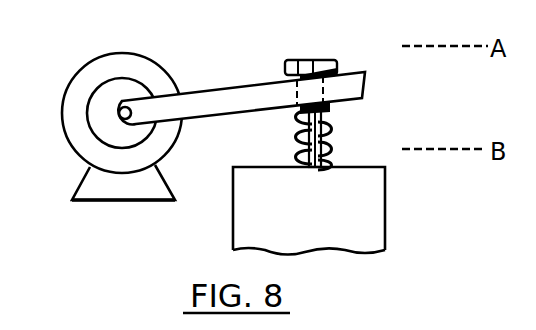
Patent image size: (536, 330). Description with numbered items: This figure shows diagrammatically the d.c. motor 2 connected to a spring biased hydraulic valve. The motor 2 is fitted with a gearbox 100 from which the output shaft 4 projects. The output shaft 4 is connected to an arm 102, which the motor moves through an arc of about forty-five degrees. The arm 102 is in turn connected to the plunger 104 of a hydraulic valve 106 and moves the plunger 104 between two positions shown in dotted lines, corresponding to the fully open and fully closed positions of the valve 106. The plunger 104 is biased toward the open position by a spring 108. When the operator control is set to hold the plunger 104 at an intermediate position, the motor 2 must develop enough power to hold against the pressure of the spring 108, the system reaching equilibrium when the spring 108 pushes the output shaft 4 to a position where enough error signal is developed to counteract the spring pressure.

The gearbox 100 is at (112, 79).
The d.c. motor 2 is at (65, 106).
The output shaft 4 is at (121, 125).
The arm 102 is at (212, 92).
The plunger 104 is at (299, 62).
The hydraulic valve 106 is at (403, 188).
The spring 108 is at (327, 137).